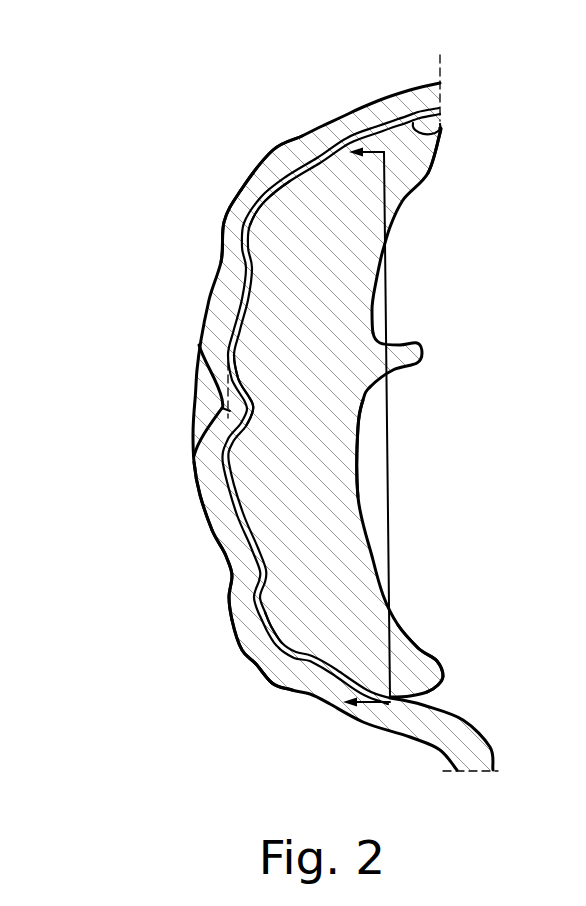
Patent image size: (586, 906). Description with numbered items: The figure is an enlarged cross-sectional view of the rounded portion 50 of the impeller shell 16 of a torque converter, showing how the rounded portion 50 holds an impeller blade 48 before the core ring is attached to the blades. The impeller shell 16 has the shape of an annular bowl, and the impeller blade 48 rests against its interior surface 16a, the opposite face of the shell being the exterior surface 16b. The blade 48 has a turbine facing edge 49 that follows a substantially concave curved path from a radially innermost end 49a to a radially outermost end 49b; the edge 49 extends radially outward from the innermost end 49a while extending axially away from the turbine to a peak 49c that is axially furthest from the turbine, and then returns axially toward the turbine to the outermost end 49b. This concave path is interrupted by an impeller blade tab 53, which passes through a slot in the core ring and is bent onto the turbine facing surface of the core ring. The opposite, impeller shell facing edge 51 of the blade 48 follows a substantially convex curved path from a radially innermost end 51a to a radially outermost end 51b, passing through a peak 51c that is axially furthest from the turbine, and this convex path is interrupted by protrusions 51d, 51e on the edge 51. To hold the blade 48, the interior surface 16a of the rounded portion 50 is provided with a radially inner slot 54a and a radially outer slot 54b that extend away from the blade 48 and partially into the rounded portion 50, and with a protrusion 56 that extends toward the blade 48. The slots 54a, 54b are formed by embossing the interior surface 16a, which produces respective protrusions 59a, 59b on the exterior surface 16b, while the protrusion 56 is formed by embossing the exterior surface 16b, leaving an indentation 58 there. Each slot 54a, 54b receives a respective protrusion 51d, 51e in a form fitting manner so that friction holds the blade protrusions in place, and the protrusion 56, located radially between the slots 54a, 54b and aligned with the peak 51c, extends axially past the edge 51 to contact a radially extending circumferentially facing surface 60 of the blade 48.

The impeller shell 16 is at (300, 150).
The interior surface 16a is at (255, 580).
The exterior surface 16b is at (200, 508).
The impeller blade 48 is at (400, 248).
The turbine facing edge 49 is at (362, 498).
The radially innermost end 49a is at (443, 675).
The radially outermost end 49b is at (440, 134).
The peak 49c is at (360, 428).
The rounded portion 50 is at (173, 292).
The impeller shell facing edge 51 is at (249, 300).
The radially innermost end 51a is at (455, 700).
The radially outermost end 51b is at (440, 129).
The peak 51c is at (212, 418).
The protrusion 51d is at (266, 633).
The protrusion 51e is at (256, 198).
The impeller blade tab 53 is at (417, 342).
The radially inner slot 54a is at (283, 680).
The radially outer slot 54b is at (228, 237).
The protrusion 56 is at (249, 414).
The indentation 58 is at (202, 403).
The protrusion 59a is at (254, 686).
The protrusion 59b is at (235, 146).
The radially extending circumferentially facing surface 60 is at (299, 542).